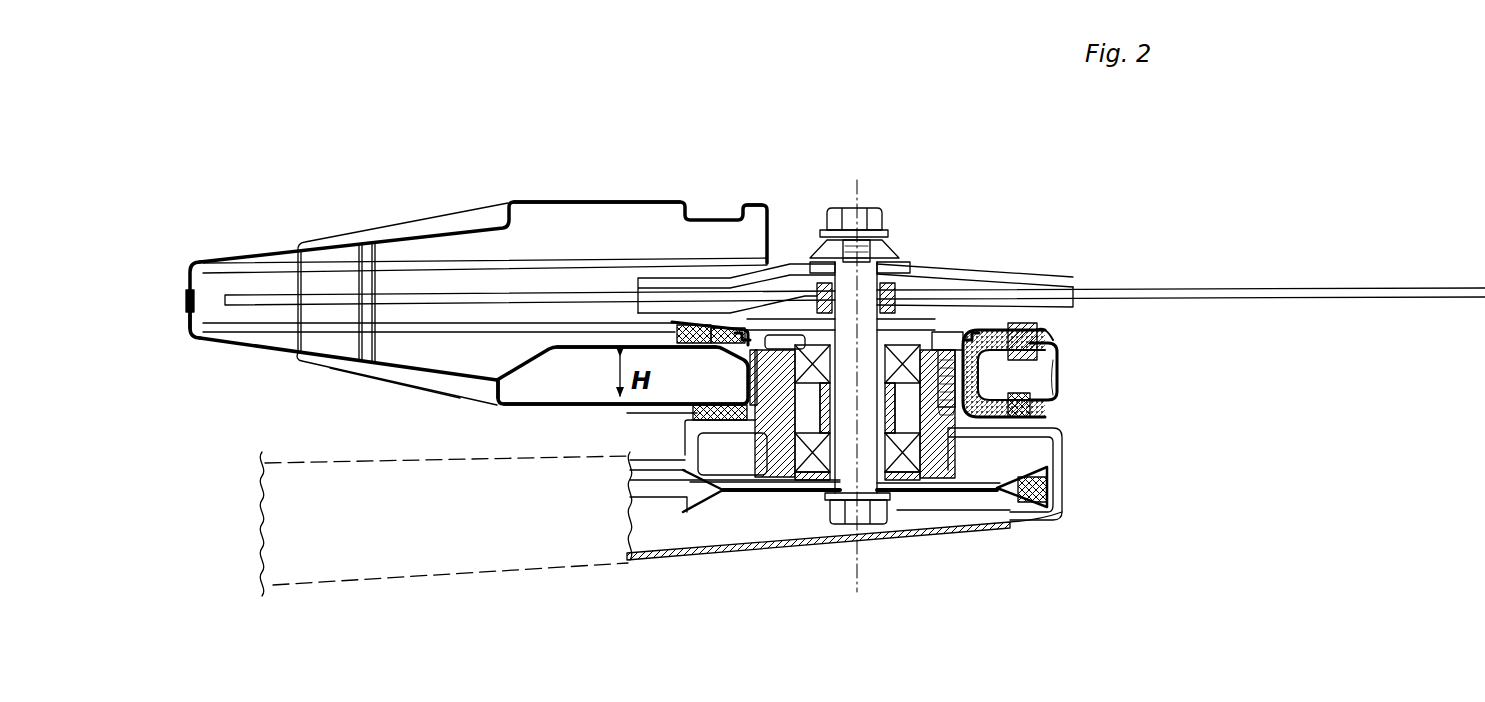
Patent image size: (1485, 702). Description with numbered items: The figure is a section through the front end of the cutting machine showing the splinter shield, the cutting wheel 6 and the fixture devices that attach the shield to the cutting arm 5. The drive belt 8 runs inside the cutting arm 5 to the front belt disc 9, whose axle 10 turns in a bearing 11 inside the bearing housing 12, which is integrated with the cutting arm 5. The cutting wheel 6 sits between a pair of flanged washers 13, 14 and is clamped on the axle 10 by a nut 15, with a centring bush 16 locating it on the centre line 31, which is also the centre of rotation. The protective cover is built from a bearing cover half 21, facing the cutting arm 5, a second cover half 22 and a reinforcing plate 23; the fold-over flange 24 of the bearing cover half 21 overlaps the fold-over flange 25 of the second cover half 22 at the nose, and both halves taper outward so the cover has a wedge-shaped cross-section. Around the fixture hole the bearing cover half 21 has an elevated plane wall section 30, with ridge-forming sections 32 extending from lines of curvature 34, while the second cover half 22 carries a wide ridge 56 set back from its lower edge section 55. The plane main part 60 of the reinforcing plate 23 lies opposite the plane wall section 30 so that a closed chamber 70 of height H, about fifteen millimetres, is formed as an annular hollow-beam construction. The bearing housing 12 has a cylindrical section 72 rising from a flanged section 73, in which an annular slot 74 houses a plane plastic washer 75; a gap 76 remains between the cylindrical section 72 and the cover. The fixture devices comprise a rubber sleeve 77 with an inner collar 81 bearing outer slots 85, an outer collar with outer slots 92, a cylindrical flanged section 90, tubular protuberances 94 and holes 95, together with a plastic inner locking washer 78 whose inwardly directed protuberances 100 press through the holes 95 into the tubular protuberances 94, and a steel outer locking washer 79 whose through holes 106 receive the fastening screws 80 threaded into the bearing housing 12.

The cutting arm 5 is at (462, 575).
The cutting wheel 6 is at (1250, 291).
The drive belt 8 is at (657, 502).
The front belt disc 9 is at (790, 504).
The axle 10 is at (867, 478).
The bearing 11 is at (907, 464).
The bearing housing 12 is at (960, 500).
The flanged washer 13 is at (1075, 305).
The flanged washer 14 is at (1072, 284).
The nut 15 is at (873, 221).
The centring bush 16 is at (890, 293).
The bearing cover half 21 is at (384, 368).
The second cover half 22 is at (425, 231).
The reinforcing plate 23 is at (522, 364).
The fold-over flange 24 is at (190, 318).
The fold-over flange 25 is at (205, 284).
The plane wall section 30 is at (590, 407).
The centre line 31 is at (857, 192).
The ridge-forming section 32 is at (422, 394).
The line of curvature 34 is at (500, 408).
The lower edge section 55 is at (753, 203).
The wide ridge 56 is at (593, 200).
The plane main part 60 is at (580, 346).
The closed chamber 70 is at (571, 393).
The cylindrical section 72 is at (1047, 490).
The flanged section 73 is at (1020, 437).
The annular slot 74 is at (1037, 485).
The plane plastic washer 75 is at (957, 460).
The gap 76 is at (745, 398).
The rubber sleeve 77 is at (697, 348).
The inner locking washer 78 is at (688, 323).
The outer locking washer 79 is at (713, 325).
The fastening screws 80 is at (985, 328).
The inner collar 81 is at (1077, 408).
The outer slots 85 is at (1035, 393).
The cylindrical flanged section 90 is at (662, 340).
The outer slots 92 is at (1005, 328).
The tubular protuberances 94 is at (1056, 372).
The holes 95 is at (1040, 327).
The inwardly directed protuberances 100 is at (1116, 388).
The through holes 106 is at (950, 331).